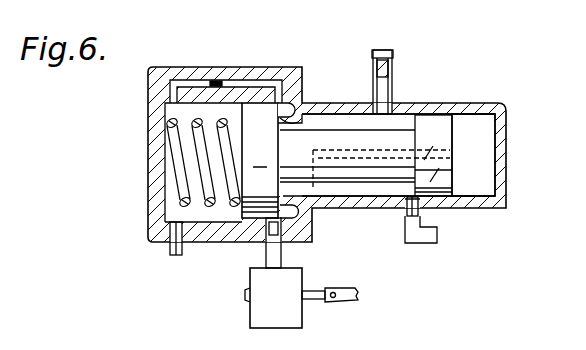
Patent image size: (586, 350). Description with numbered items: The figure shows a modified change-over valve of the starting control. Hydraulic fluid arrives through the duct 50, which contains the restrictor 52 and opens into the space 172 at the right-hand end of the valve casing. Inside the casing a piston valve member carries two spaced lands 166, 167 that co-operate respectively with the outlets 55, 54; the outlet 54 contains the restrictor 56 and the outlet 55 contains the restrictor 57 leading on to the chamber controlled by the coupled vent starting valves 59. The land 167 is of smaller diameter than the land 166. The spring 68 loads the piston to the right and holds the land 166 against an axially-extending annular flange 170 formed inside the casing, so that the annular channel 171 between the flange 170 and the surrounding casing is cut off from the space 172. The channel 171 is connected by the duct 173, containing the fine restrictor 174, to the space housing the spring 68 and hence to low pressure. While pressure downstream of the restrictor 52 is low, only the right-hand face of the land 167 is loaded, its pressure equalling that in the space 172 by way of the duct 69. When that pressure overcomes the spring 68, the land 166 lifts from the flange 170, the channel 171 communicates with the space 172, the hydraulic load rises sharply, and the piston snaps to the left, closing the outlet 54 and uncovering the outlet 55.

The duct 50 is at (383, 97).
The restrictor 52 is at (390, 60).
The outlet 54 is at (407, 238).
The outlet 55 is at (285, 228).
The restrictor 56 is at (420, 212).
The restrictor 57 is at (235, 243).
The vent starting valves 59 is at (243, 295).
The spring 68 is at (183, 203).
The duct 69 is at (452, 117).
The land 166 is at (258, 120).
The land 167 is at (433, 122).
The annular flange 170 is at (318, 120).
The annular channel 171 is at (288, 107).
The space 172 is at (363, 118).
The duct 173 is at (187, 87).
The fine restrictor 174 is at (216, 80).